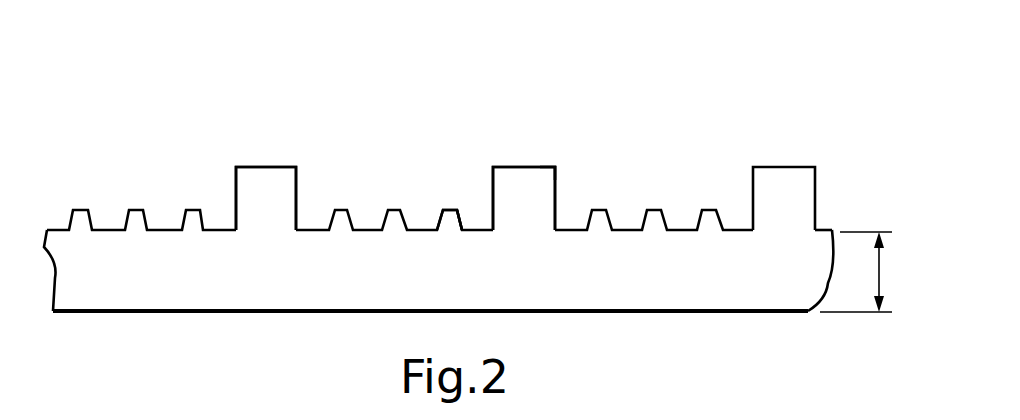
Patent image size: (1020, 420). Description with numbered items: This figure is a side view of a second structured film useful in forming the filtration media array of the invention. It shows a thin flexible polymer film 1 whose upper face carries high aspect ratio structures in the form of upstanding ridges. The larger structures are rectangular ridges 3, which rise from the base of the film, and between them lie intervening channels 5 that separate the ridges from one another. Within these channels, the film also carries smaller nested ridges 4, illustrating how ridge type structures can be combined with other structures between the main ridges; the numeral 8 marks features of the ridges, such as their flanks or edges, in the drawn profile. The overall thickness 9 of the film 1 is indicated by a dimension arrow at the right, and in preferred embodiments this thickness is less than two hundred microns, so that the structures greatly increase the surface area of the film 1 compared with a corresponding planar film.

The film layer 1 is at (277, 298).
The rectangular ridge 3 is at (287, 192).
The nested ridge 4 is at (448, 212).
The channel 5 is at (402, 142).
The flank / edge of projection 8 is at (457, 212).
The thickness 9 is at (879, 272).